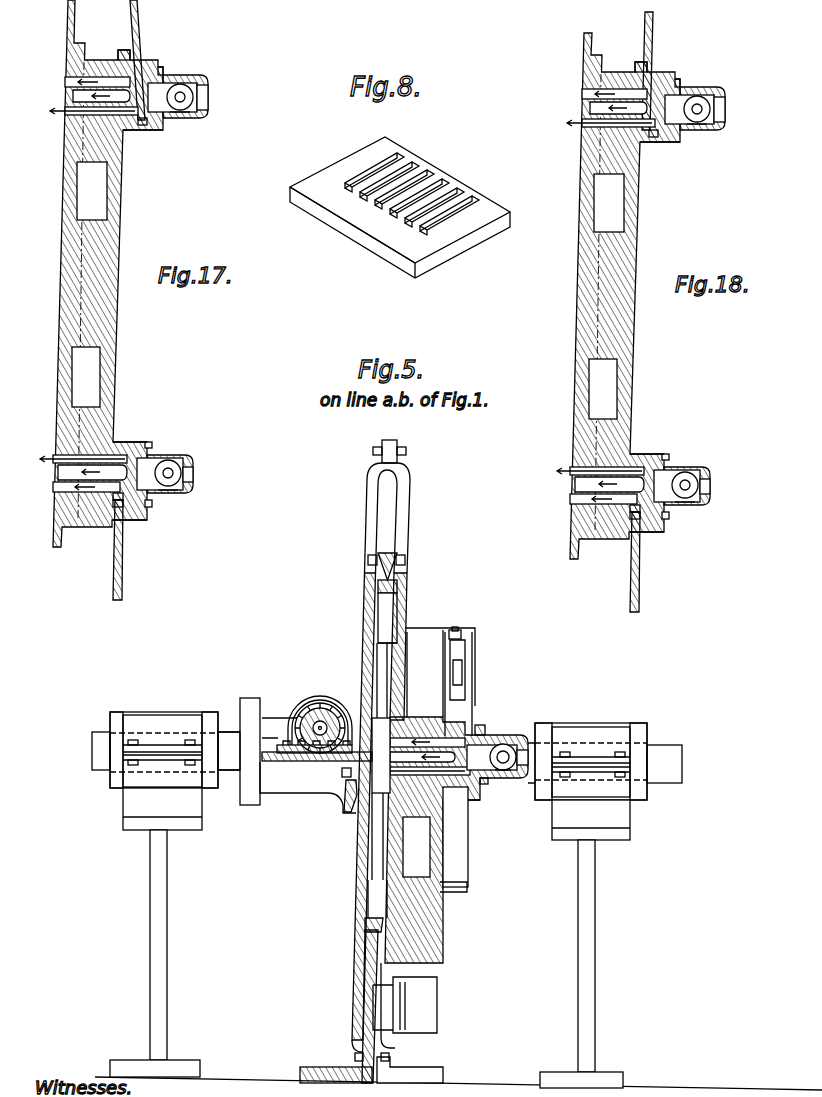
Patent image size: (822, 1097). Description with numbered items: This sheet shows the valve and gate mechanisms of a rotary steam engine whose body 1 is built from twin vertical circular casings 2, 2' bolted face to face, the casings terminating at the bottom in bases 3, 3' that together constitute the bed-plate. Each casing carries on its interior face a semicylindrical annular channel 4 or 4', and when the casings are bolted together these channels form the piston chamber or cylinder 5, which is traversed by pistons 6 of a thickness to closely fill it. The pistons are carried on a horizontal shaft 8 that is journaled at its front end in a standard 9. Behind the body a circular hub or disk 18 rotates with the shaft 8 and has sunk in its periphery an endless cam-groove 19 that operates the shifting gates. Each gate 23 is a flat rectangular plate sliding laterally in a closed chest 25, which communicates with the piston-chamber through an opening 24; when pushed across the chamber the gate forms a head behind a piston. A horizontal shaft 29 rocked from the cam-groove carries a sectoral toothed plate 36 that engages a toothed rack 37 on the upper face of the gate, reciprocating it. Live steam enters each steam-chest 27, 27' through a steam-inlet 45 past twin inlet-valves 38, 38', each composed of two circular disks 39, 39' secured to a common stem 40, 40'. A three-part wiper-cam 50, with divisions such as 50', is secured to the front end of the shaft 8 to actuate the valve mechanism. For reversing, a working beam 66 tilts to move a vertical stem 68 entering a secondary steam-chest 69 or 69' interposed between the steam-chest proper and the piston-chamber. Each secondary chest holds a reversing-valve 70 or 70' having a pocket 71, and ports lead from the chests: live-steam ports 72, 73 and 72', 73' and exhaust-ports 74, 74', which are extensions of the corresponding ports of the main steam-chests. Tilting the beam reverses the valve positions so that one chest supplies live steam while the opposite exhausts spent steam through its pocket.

In FIG. 5, the general structure or body of the engine 1 is at (391, 502).
In FIG. 5, the circular casing 2 is at (388, 518).
In FIG. 5, the circular casing 2' is at (402, 526).
In FIG. 5, the base 3 is at (339, 1006).
In FIG. 5, the base 3' is at (408, 1030).
In FIG. 5, the semicylindrical annular channel 4 is at (362, 735).
In FIG. 5, the semicylindrical annular channel 4' is at (407, 585).
In FIG. 17, the piston chamber or cylinder 5 is at (62, 258).
In FIG. 18, the piston chamber or cylinder 5 is at (622, 296).
In FIG. 5, the piston chamber or cylinder 5 is at (380, 624).
In FIG. 5, the piston 6 is at (390, 605).
In FIG. 5, the horizontal shaft 8 is at (387, 756).
In FIG. 5, the standard 9 is at (370, 938).
In FIG. 5, the circular hub or disk 18 is at (440, 672).
In FIG. 5, the endless cam-groove 19 is at (447, 892).
In FIG. 8, the gate 23 is at (409, 194).
In FIG. 5, the gate 23 is at (348, 812).
In FIG. 5, the opening 24 is at (355, 813).
In FIG. 5, the box or chest 25 is at (320, 703).
In FIG. 17, the steam-chest 27 is at (178, 109).
In FIG. 18, the steam-chest 27 is at (695, 125).
In FIG. 5, the steam-chest 27 is at (492, 756).
In FIG. 17, the steam-chest 27' is at (165, 465).
In FIG. 18, the steam-chest 27' is at (682, 501).
In FIG. 5, the horizontal shaft 29 is at (295, 742).
In FIG. 5, the spur-gear or sectoral toothed plate 36 is at (300, 708).
In FIG. 8, the toothed rack 37 is at (378, 208).
In FIG. 5, the toothed rack 37 is at (292, 762).
In FIG. 17, the live-steam inlet-valve 38 is at (176, 97).
In FIG. 18, the live-steam inlet-valve 38 is at (691, 297).
In FIG. 5, the live-steam inlet-valve 38 is at (503, 757).
In FIG. 17, the live-steam inlet-valve 38' is at (168, 473).
In FIG. 17, the circular disk 39 is at (181, 132).
In FIG. 18, the circular disk 39 is at (698, 145).
In FIG. 5, the circular disk 39 is at (510, 790).
In FIG. 17, the circular disk 39' is at (174, 511).
In FIG. 18, the circular disk 39' is at (691, 523).
In FIG. 17, the common stem 40 is at (184, 77).
In FIG. 18, the common stem 40 is at (694, 278).
In FIG. 5, the common stem 40 is at (511, 737).
In FIG. 17, the axle 40' is at (167, 500).
In FIG. 17, the steam-inlet 45 is at (203, 283).
In FIG. 18, the steam-inlet 45 is at (719, 295).
In FIG. 5, the steam-inlet 45 is at (530, 742).
In FIG. 5, the three-part wiper-cam 50 is at (250, 751).
In FIG. 5, the cam division 50' is at (236, 751).
In FIG. 5, the horizontal working beam or double lever 66 is at (461, 634).
In FIG. 17, the vertical stem 68 is at (133, 300).
In FIG. 18, the vertical stem 68 is at (647, 312).
In FIG. 5, the vertical stem 68 is at (460, 700).
In FIG. 17, the secondary steam-chest 69 is at (143, 147).
In FIG. 18, the secondary steam-chest 69 is at (658, 158).
In FIG. 5, the secondary steam-chest 69 is at (472, 814).
In FIG. 17, the secondary steam-chest 69' is at (130, 468).
In FIG. 18, the secondary steam-chest 69' is at (647, 479).
In FIG. 17, the reversing-valve 70 is at (155, 78).
In FIG. 18, the reversing-valve 70 is at (650, 324).
In FIG. 5, the reversing-valve 70 is at (490, 793).
In FIG. 17, the reversing-valve 70' is at (131, 519).
In FIG. 17, the pocket of the valve 71 is at (118, 53).
In FIG. 18, the pocket of the valve 71 is at (641, 292).
In FIG. 5, the pocket of the valve 71 is at (485, 727).
In FIG. 17, the live-steam port 72 is at (91, 80).
In FIG. 18, the live-steam port 72 is at (606, 92).
In FIG. 5, the live-steam port 72 is at (427, 729).
In FIG. 17, the live-steam port 72' is at (81, 488).
In FIG. 18, the live-steam port 72' is at (592, 510).
In FIG. 17, the live-steam port 73 is at (89, 114).
In FIG. 18, the live-steam port 73 is at (607, 125).
In FIG. 5, the live-steam port 73 is at (421, 771).
In FIG. 17, the live-steam port 73' is at (83, 455).
In FIG. 18, the live-steam port 73' is at (600, 470).
In FIG. 17, the exhaust-port 74 is at (83, 96).
In FIG. 18, the exhaust-port 74 is at (598, 108).
In FIG. 5, the exhaust-port 74 is at (422, 757).
In FIG. 17, the exhaust-port 74' is at (76, 472).
In FIG. 18, the exhaust-port 74' is at (591, 484).